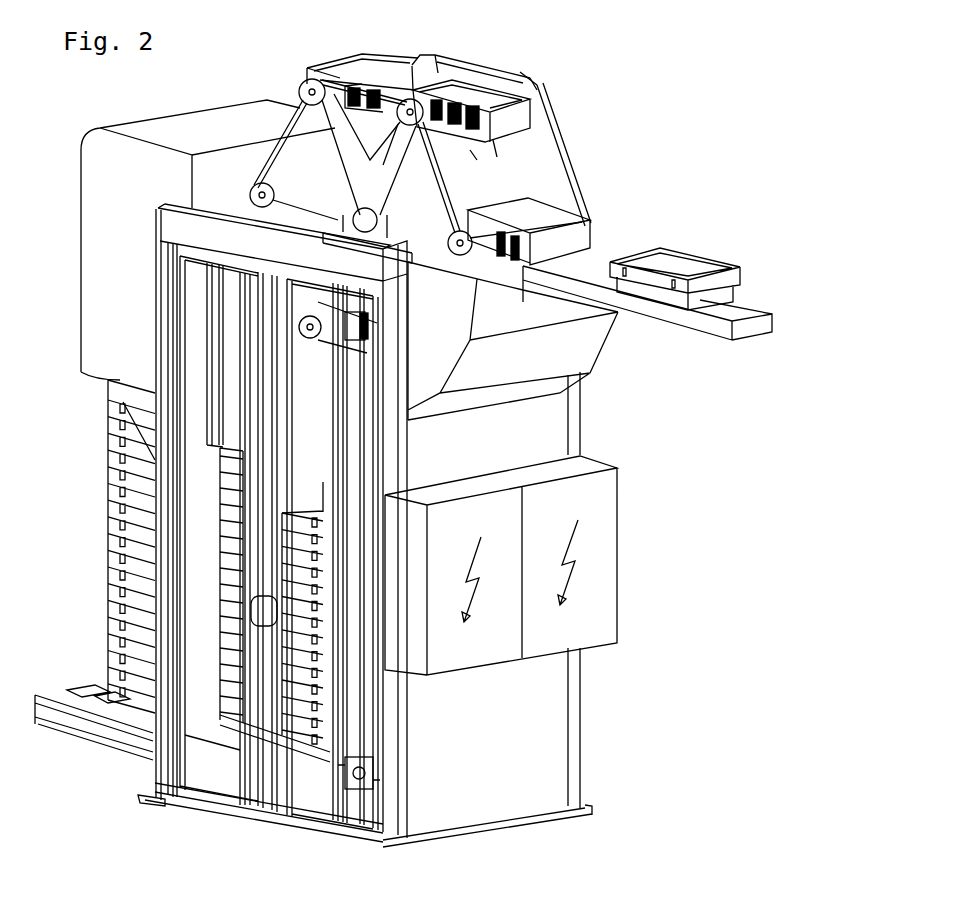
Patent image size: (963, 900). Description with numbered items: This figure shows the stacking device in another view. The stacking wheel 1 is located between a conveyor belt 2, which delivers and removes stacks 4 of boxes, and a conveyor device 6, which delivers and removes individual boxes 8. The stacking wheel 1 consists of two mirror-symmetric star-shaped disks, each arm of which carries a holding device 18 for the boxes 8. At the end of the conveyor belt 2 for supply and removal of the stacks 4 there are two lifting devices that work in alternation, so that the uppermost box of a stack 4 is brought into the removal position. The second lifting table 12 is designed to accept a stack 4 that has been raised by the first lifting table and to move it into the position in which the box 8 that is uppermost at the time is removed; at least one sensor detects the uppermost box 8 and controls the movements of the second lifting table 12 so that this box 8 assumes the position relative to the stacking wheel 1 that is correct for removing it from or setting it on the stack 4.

The stacking wheel 1 is at (579, 147).
The conveyor belt 2 is at (82, 717).
The stack of boxes 4 is at (117, 550).
The conveyor device 6 is at (673, 324).
The box 8 is at (693, 252).
The second lifting table 12 is at (243, 363).
The holding device 18 is at (353, 757).